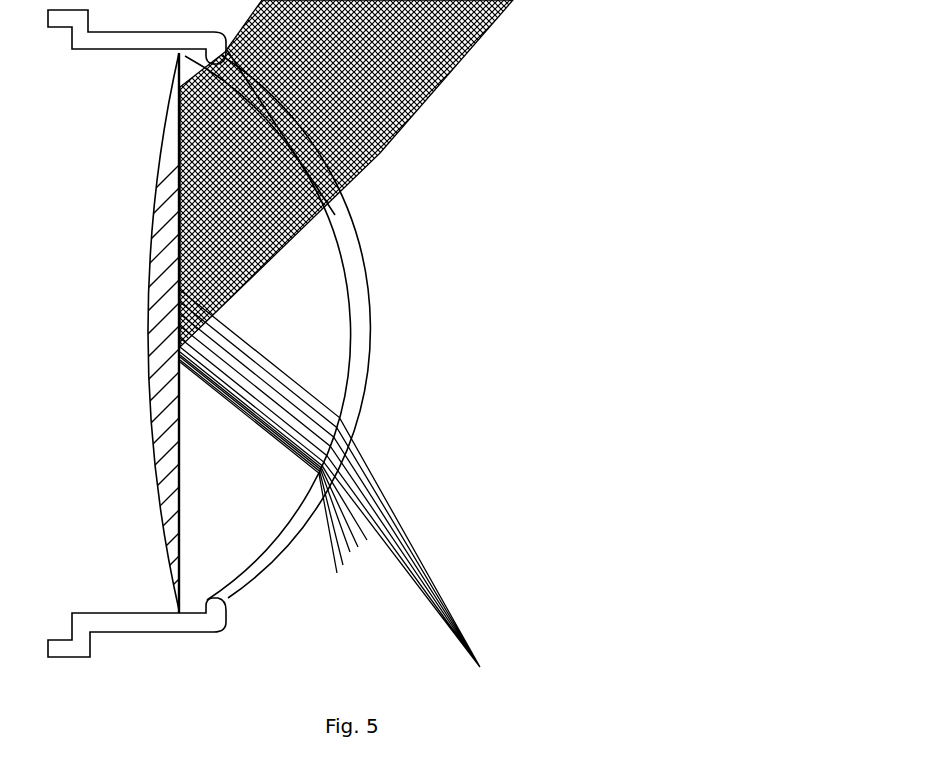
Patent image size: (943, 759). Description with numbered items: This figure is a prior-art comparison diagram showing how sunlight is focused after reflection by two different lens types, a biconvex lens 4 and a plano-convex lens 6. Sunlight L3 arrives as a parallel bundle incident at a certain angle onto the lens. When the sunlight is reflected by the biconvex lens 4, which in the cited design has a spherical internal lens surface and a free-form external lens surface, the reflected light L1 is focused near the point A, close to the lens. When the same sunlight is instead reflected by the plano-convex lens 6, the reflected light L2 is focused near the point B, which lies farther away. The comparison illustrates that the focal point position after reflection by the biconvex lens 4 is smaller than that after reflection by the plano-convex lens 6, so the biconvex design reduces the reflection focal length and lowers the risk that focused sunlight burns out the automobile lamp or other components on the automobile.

The biconvex lens 4 is at (343, 245).
The plano-convex lens 6 is at (178, 400).
The reflected light L1 is at (279, 481).
The reflected light L2 is at (348, 494).
The sunlight L3 is at (500, 18).
The focal point position of biconvex lens reflection A is at (330, 508).
The focal point position of plano-convex lens reflection B is at (463, 633).